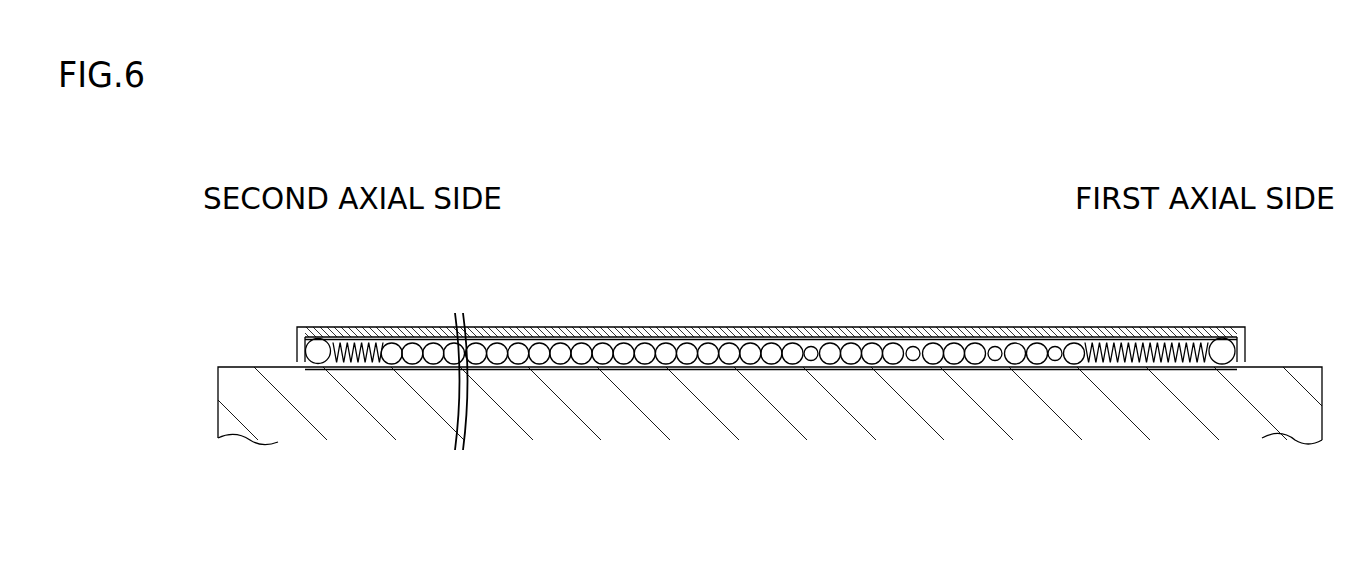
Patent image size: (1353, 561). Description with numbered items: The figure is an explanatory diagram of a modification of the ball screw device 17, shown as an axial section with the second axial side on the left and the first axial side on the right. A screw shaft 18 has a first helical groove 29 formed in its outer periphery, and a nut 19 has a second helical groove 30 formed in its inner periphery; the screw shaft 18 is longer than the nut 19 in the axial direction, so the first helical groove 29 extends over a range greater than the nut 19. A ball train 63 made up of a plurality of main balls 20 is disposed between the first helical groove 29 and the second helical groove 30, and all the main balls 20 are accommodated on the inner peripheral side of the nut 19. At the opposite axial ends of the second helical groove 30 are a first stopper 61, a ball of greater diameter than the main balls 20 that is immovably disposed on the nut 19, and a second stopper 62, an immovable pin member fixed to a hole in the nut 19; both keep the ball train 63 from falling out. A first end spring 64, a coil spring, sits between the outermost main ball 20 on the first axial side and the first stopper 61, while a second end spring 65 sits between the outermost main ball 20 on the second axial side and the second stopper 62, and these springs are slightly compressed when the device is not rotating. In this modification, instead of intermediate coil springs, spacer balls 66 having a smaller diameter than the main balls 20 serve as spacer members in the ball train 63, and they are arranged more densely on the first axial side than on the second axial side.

The ball screw device 17 is at (1133, 301).
The screw shaft 18 is at (416, 403).
The nut 19 is at (710, 330).
The main balls 20 is at (392, 343).
The first helical groove 29 is at (576, 341).
The second helical groove 30 is at (644, 342).
The first stopper 61 is at (1220, 364).
The second stopper 62 is at (318, 362).
The ball train 63 is at (524, 379).
The first end spring 64 is at (1110, 367).
The second end spring 65 is at (352, 364).
The spacer balls 66 is at (808, 367).